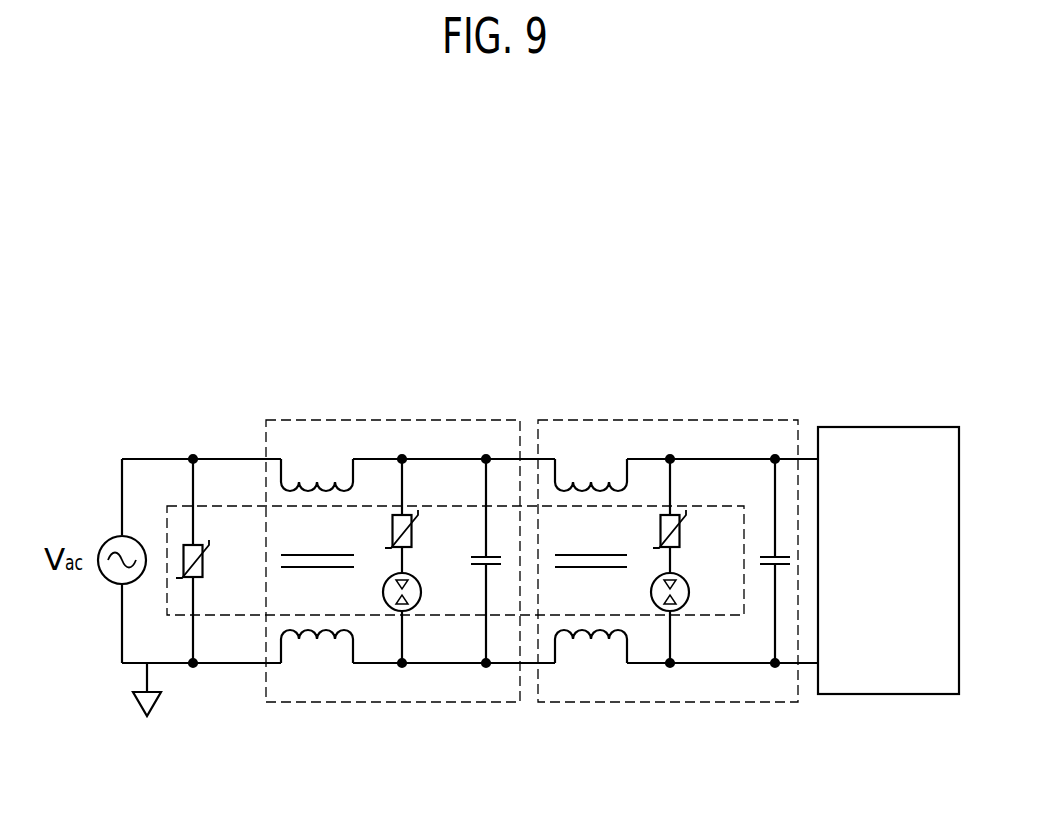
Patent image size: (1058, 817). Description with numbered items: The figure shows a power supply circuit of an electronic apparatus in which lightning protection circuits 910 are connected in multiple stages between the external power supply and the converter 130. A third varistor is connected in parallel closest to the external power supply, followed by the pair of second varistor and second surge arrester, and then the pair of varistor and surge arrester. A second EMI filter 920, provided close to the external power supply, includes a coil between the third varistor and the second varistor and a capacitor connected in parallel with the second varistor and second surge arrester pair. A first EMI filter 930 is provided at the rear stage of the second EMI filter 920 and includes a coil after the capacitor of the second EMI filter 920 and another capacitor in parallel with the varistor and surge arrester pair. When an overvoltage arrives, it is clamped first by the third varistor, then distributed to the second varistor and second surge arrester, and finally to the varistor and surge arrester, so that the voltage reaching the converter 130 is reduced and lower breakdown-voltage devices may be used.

The lightning protection circuits 910 is at (220, 615).
The second EMI filter 920 is at (398, 702).
The first EMI filter 930 is at (646, 702).
The converter 130 is at (890, 694).